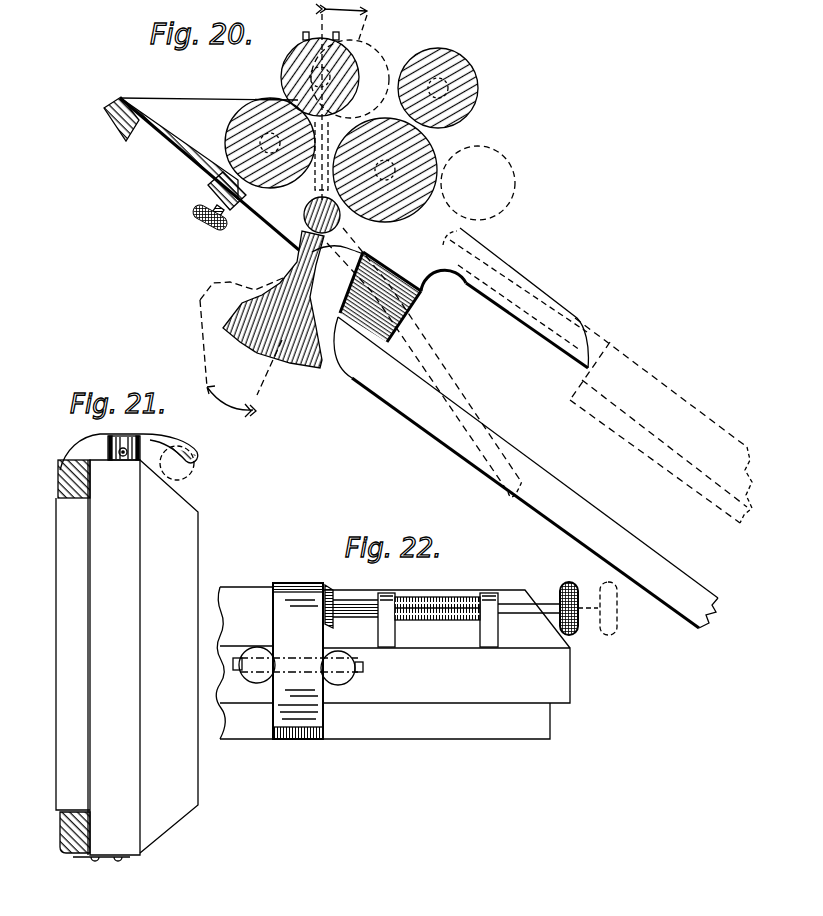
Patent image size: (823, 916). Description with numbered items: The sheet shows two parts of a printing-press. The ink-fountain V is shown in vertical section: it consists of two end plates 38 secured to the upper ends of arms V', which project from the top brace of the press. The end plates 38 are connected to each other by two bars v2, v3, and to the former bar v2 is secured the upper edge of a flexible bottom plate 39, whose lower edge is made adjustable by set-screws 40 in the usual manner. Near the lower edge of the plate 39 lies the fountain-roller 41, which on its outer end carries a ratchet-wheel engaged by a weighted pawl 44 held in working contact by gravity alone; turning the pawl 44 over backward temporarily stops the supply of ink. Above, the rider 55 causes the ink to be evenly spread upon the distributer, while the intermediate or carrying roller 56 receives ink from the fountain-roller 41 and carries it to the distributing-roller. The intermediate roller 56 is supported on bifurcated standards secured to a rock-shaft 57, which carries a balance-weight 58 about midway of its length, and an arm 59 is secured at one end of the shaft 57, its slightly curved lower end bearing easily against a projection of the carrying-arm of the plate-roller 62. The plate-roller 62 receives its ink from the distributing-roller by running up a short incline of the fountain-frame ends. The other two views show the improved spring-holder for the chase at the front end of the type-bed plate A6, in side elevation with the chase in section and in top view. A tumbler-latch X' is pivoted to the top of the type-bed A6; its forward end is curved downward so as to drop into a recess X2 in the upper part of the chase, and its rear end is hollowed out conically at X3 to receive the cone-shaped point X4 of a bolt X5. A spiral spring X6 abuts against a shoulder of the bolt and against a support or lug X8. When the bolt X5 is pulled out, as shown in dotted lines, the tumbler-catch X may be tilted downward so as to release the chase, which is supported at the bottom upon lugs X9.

In FIG. 20, the ink-fountain V is at (173, 74).
In FIG. 20, the bar v2 is at (112, 113).
In FIG. 20, the bar v3 is at (206, 196).
In FIG. 20, the flexible bottom plate 39 is at (185, 147).
In FIG. 20, the set-screws 40 is at (214, 226).
In FIG. 20, the fountain-roller 41 is at (247, 136).
In FIG. 20, the intermediate or carrying roller 56 is at (297, 74).
In FIG. 20, the rider 55 is at (466, 80).
In FIG. 20, the weighted pawl 44 is at (385, 170).
In FIG. 20, the plate-roller 62 is at (478, 183).
In FIG. 20, the rock-shaft 57 is at (297, 218).
In FIG. 20, the balance-weight 58 is at (297, 362).
In FIG. 20, the end plates 38 is at (362, 249).
In FIG. 20, the arm 59 is at (437, 362).
In FIG. 20, the arms V' is at (561, 450).
In FIG. 21, the tumbler-latch X' is at (94, 453).
In FIG. 22, the tumbler-latch X' is at (306, 654).
In FIG. 21, the recess X2 is at (60, 468).
In FIG. 22, the recess X2 is at (284, 739).
In FIG. 21, the conical hollow X3 is at (197, 452).
In FIG. 22, the conical hollow X3 is at (329, 598).
In FIG. 21, the type-bed plate A6 is at (161, 560).
In FIG. 21, the lugs X9 is at (70, 853).
In FIG. 22, the tumbler-catch X is at (298, 661).
In FIG. 22, the cone-shaped point X4 is at (398, 598).
In FIG. 22, the spiral spring X6 is at (462, 598).
In FIG. 22, the support or lug X8 is at (492, 622).
In FIG. 22, the bolt X5 is at (534, 607).